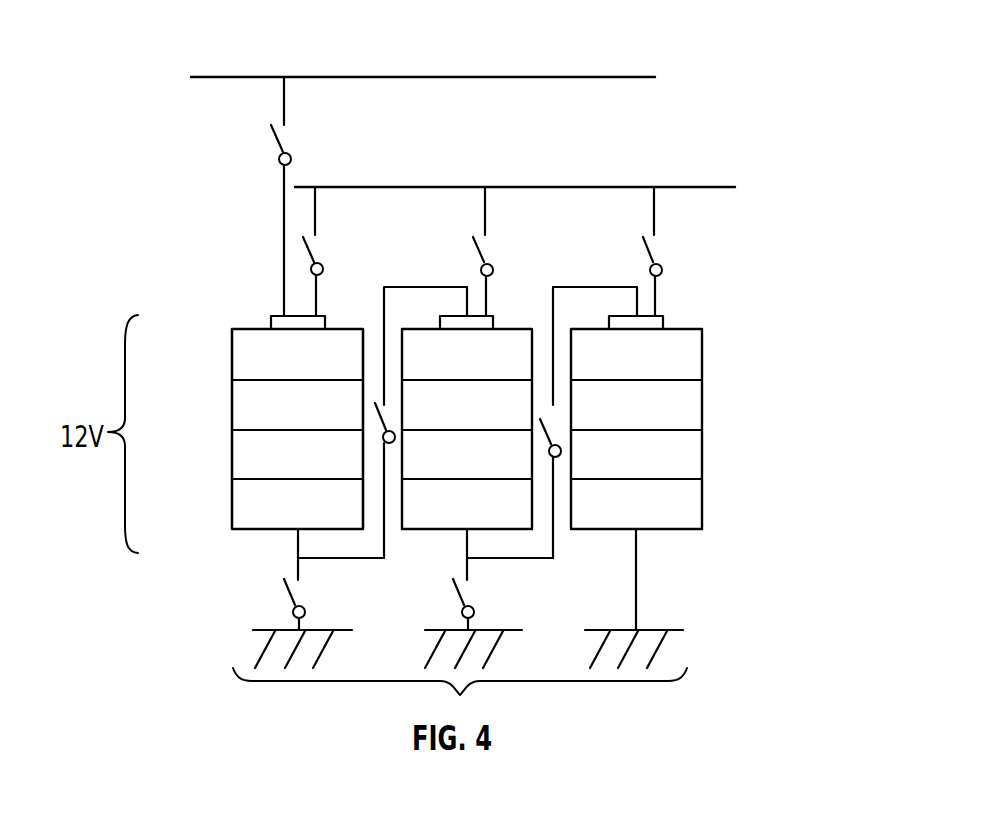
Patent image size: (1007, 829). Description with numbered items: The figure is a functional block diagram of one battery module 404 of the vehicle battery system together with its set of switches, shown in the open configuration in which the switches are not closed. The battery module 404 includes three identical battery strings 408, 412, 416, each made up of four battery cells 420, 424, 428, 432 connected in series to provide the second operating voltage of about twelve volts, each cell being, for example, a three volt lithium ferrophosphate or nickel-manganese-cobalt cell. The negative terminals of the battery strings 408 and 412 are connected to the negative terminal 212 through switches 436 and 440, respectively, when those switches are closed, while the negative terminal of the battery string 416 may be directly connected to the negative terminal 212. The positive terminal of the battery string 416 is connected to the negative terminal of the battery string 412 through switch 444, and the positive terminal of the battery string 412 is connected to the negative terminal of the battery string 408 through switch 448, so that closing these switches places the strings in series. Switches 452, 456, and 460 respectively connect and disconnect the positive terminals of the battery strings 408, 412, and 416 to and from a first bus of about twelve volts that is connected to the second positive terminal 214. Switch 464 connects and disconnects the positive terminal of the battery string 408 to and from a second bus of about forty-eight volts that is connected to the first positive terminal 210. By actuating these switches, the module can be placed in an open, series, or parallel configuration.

The first positive terminal 210 is at (628, 77).
The second positive terminal 214 is at (705, 187).
The negative terminal 212 is at (707, 642).
The battery module 404 is at (200, 302).
The battery string 408 is at (256, 391).
The battery string 412 is at (503, 329).
The battery string 416 is at (680, 329).
The battery cell 420 is at (232, 355).
The battery cell 424 is at (232, 405).
The battery cell 428 is at (232, 455).
The battery cell 432 is at (232, 505).
The switch 436 is at (268, 603).
The switch 440 is at (448, 610).
The switch 444 is at (558, 464).
The switch 448 is at (391, 452).
The switch 452 is at (325, 250).
The switch 456 is at (492, 248).
The switch 460 is at (658, 248).
The switch 464 is at (297, 138).